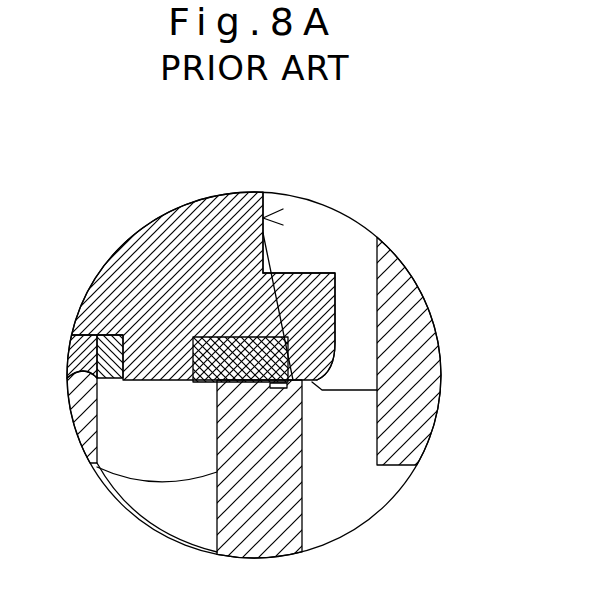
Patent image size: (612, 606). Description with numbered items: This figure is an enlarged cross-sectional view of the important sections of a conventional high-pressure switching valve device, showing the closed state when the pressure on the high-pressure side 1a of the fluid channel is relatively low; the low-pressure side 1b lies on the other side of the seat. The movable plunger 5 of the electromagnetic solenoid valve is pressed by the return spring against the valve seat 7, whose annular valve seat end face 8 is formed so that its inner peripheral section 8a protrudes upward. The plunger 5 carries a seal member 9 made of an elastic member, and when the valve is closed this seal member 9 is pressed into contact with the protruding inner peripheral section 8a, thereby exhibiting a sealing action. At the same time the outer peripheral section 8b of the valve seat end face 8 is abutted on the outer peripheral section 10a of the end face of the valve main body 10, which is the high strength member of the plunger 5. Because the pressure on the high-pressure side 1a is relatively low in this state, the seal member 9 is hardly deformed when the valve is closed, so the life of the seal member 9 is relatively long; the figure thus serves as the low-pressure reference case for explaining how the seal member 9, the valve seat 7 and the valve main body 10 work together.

The high-pressure side of the high-pressure fluid channel 1a is at (357, 416).
The low-pressure side of the high-pressure fluid channel 1b is at (165, 515).
The plunger 5 is at (263, 218).
The valve seat 7 is at (302, 485).
The valve seat end face 8 is at (233, 333).
The inner peripheral section of the valve seat end face 8a is at (80, 334).
The outer peripheral section of the valve seat end face 8b is at (262, 218).
The seal member 9 is at (237, 329).
The valve main body 10 is at (300, 272).
The outer peripheral section of the end face of the valve main body 10a is at (310, 383).